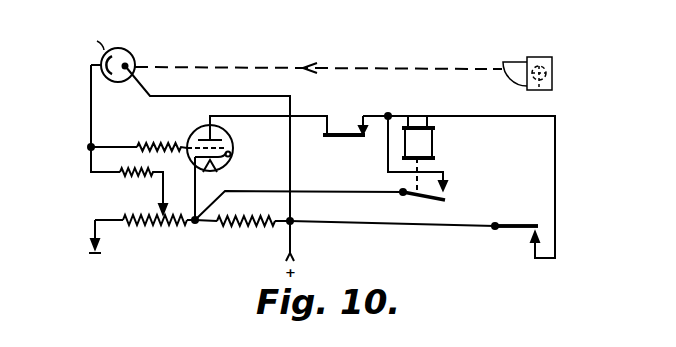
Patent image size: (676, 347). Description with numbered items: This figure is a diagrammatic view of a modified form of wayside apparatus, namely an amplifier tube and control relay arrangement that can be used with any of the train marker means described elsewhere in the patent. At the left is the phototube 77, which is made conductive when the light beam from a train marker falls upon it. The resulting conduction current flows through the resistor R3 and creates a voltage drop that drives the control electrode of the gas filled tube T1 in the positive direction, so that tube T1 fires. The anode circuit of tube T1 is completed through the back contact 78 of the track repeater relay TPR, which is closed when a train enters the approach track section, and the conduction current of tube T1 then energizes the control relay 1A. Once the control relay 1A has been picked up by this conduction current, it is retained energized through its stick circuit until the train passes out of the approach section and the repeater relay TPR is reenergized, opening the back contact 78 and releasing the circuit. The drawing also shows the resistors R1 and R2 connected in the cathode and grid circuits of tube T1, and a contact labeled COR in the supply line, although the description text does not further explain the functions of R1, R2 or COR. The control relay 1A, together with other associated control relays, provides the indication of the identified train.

The phototube 77 is at (125, 80).
The back contact 78 is at (530, 241).
The gas filled tube T1 is at (195, 129).
The cathode potentiometer R1 is at (136, 224).
The bias resistor R2 is at (221, 226).
The resistor R3 is at (141, 178).
The COR relay contact COR is at (344, 130).
The control relay 1A is at (425, 143).
The track repeater relay TPR is at (512, 211).